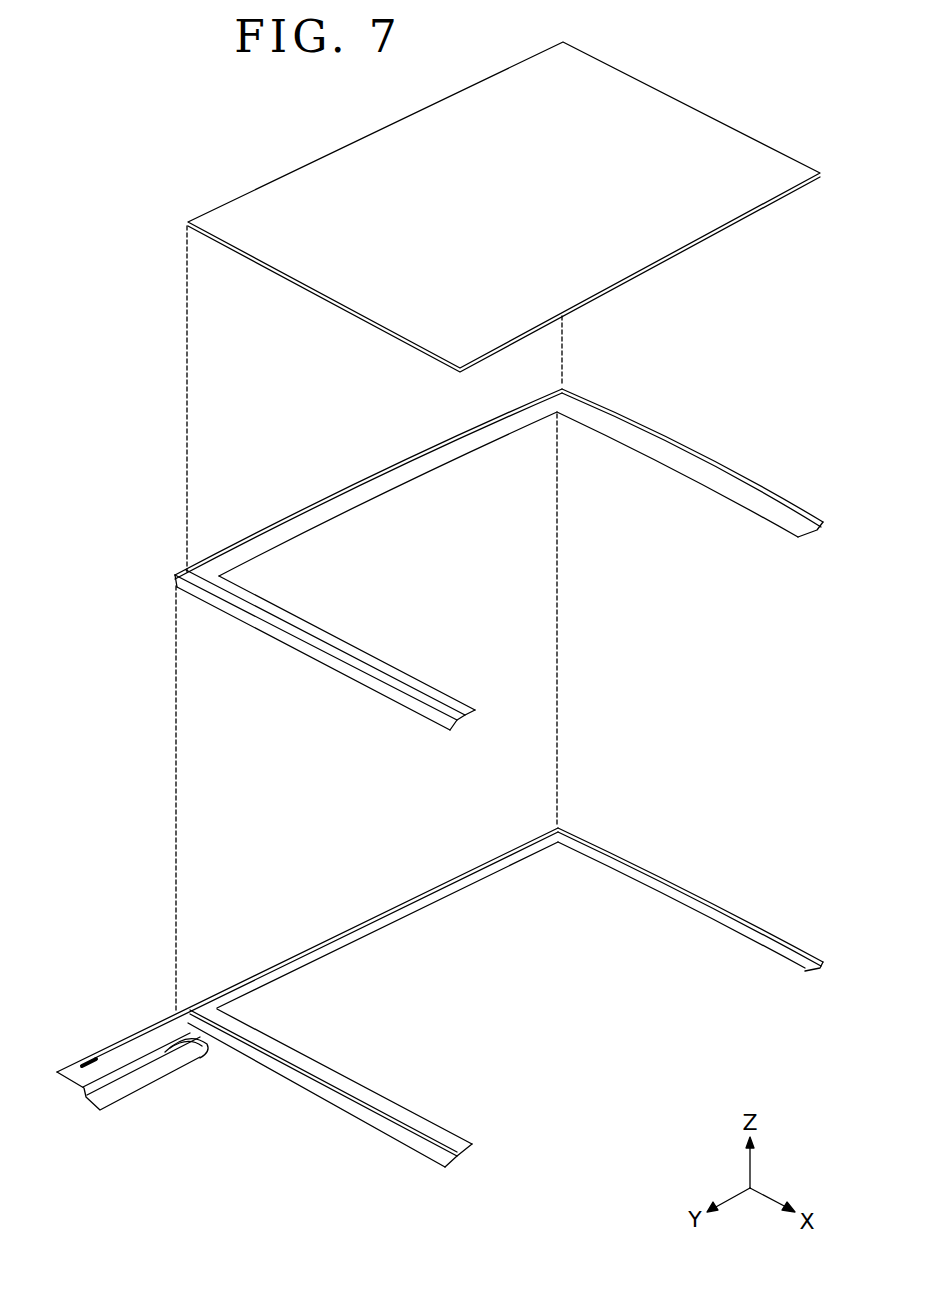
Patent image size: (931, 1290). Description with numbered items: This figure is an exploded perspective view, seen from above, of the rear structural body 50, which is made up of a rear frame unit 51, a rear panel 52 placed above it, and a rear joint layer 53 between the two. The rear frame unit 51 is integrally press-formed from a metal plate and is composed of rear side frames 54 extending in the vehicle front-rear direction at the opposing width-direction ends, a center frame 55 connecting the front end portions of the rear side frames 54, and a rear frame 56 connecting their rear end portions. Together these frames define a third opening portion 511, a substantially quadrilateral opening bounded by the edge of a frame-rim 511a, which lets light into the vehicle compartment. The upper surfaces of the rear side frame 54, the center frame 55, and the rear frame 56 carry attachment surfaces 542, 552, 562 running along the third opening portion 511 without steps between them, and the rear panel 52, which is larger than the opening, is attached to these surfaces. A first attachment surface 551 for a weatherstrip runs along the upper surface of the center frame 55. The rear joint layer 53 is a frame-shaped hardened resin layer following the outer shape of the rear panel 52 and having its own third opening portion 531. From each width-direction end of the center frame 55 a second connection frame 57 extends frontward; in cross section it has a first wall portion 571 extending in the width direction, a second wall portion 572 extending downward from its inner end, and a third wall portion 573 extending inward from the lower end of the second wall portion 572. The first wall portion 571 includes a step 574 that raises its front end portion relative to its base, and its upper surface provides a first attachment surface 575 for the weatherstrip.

The rear structural body 50 is at (101, 69).
The rear frame unit 51 is at (441, 938).
The third opening portion 511 is at (503, 868).
The frame-rim 511a is at (449, 890).
The rear panel 52 is at (661, 101).
The rear joint layer 53 is at (499, 555).
The third opening portion 531 is at (646, 451).
The rear side frame 54 is at (375, 916).
The attachment surface 542 is at (350, 938).
The center frame 55 is at (331, 1088).
The first attachment surface 551 is at (363, 1115).
The attachment surface 552 is at (330, 1066).
The rear frame 56 is at (770, 934).
The attachment surface 562 is at (681, 903).
The second connection frame 57 is at (140, 1062).
The first wall portion 571 is at (108, 1053).
The second wall portion 572 is at (90, 1103).
The third wall portion 573 is at (140, 1088).
The step 574 is at (93, 1060).
The first attachment surface 575 is at (170, 1064).